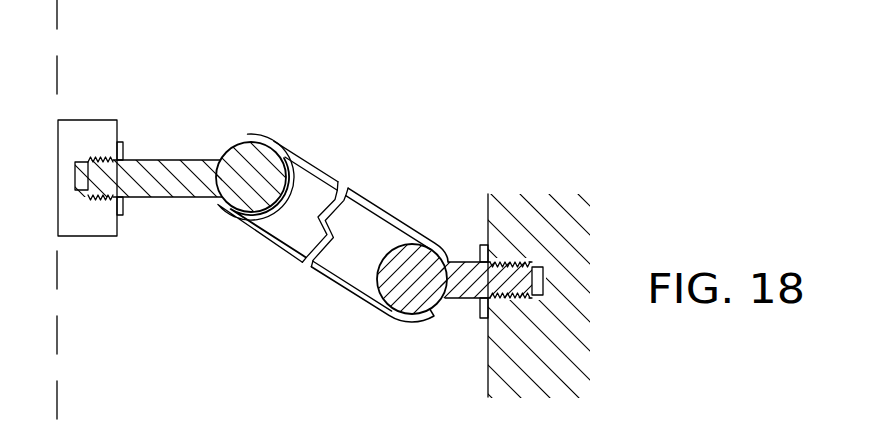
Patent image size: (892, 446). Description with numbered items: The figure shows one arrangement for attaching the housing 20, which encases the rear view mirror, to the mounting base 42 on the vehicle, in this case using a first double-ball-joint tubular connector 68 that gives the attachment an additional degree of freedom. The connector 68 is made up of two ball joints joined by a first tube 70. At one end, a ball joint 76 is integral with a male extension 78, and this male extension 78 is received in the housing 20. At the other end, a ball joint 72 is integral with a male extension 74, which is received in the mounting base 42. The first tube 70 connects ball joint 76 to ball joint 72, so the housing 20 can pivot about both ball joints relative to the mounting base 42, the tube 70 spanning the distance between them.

The housing 20 is at (530, 242).
The mounting base 42 is at (85, 222).
The first double-ball-joint tubular connector 68 is at (308, 223).
The first tube 70 is at (270, 247).
The ball joint 72 is at (245, 172).
The male extension 74 is at (187, 197).
The ball joint 76 is at (426, 282).
The male extension 78 is at (475, 278).